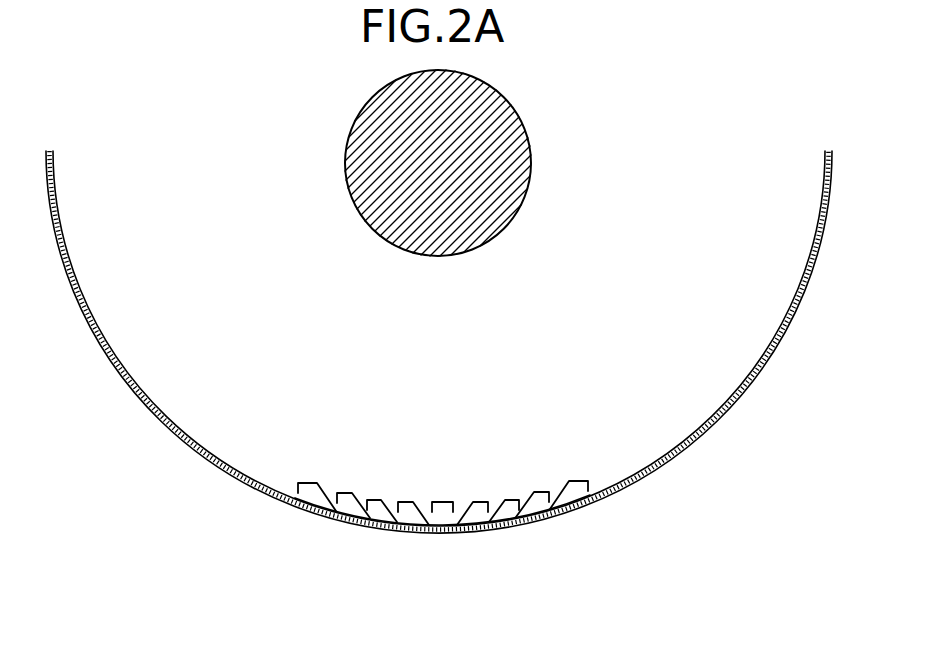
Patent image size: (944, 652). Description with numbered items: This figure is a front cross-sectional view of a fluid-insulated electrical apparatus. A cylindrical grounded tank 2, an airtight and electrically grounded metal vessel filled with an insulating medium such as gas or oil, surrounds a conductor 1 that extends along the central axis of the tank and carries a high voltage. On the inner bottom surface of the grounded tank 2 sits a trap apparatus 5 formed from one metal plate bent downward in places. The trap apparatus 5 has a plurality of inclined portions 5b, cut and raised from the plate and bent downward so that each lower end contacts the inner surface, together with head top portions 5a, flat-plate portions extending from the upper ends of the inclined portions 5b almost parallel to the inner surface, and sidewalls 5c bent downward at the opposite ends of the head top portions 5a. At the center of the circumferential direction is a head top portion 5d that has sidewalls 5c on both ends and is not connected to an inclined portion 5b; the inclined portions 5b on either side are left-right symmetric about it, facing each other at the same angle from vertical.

The conductor 1 is at (490, 220).
The grounded tank 2 is at (610, 494).
The trap apparatus 5 is at (601, 445).
The head top portion 5a is at (405, 499).
The inclined portion 5b is at (418, 526).
The sidewall 5c is at (462, 500).
The head top portion 5d is at (442, 499).